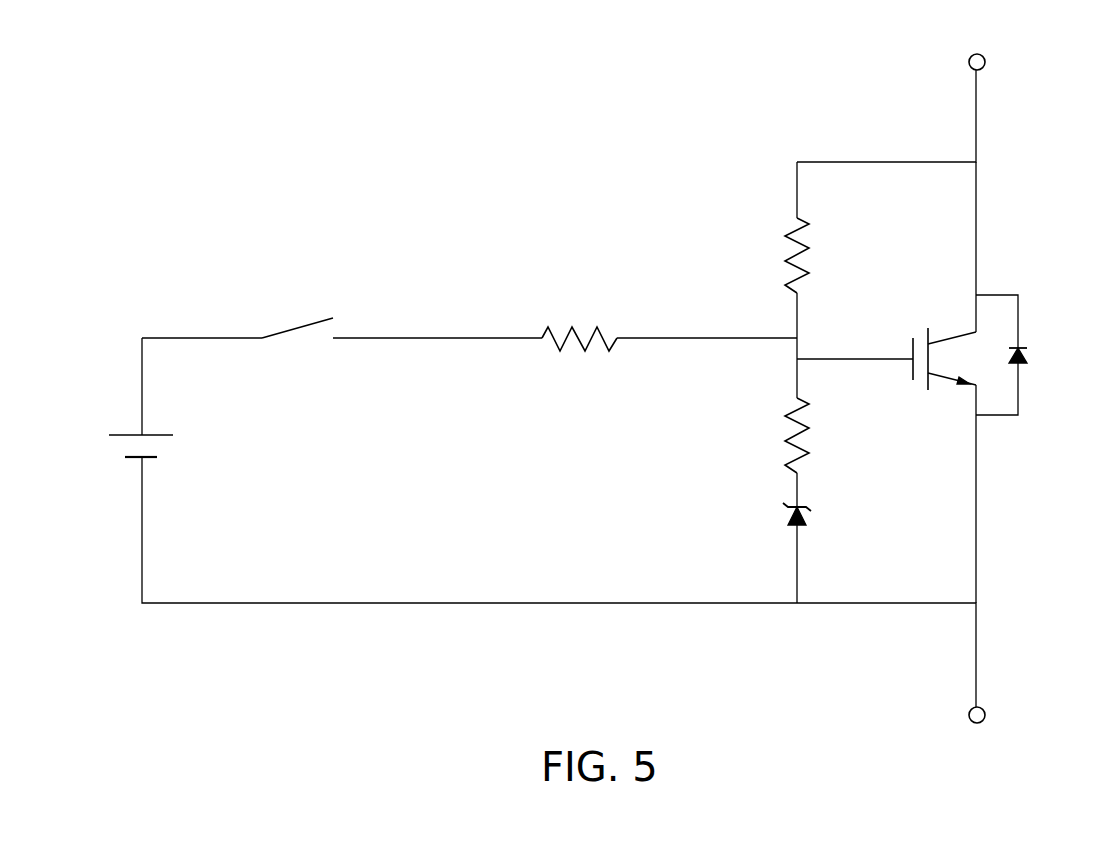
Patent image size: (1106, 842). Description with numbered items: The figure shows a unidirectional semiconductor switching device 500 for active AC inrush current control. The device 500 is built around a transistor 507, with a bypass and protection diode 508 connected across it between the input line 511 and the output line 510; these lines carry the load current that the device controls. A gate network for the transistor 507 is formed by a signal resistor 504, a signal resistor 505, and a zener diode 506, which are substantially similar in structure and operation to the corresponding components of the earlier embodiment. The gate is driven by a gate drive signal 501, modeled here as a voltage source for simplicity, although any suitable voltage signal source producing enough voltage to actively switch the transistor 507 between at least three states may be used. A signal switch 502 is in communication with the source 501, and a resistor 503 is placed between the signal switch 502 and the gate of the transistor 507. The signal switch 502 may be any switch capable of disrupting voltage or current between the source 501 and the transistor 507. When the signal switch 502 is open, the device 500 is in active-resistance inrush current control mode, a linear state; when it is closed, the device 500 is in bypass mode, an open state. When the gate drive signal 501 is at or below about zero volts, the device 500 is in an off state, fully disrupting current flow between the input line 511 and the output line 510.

The unidirectional semiconductor switching device 500 is at (174, 113).
The gate drive signal 501 is at (125, 436).
The signal switch 502 is at (295, 327).
The resistor 503 is at (572, 326).
The signal resistor 504 is at (785, 263).
The signal resistor 505 is at (785, 441).
The zener diode 506 is at (808, 513).
The transistor 507 is at (911, 346).
The bypass and protection diode 508 is at (1025, 350).
The output line 510 is at (986, 713).
The input line 511 is at (986, 61).